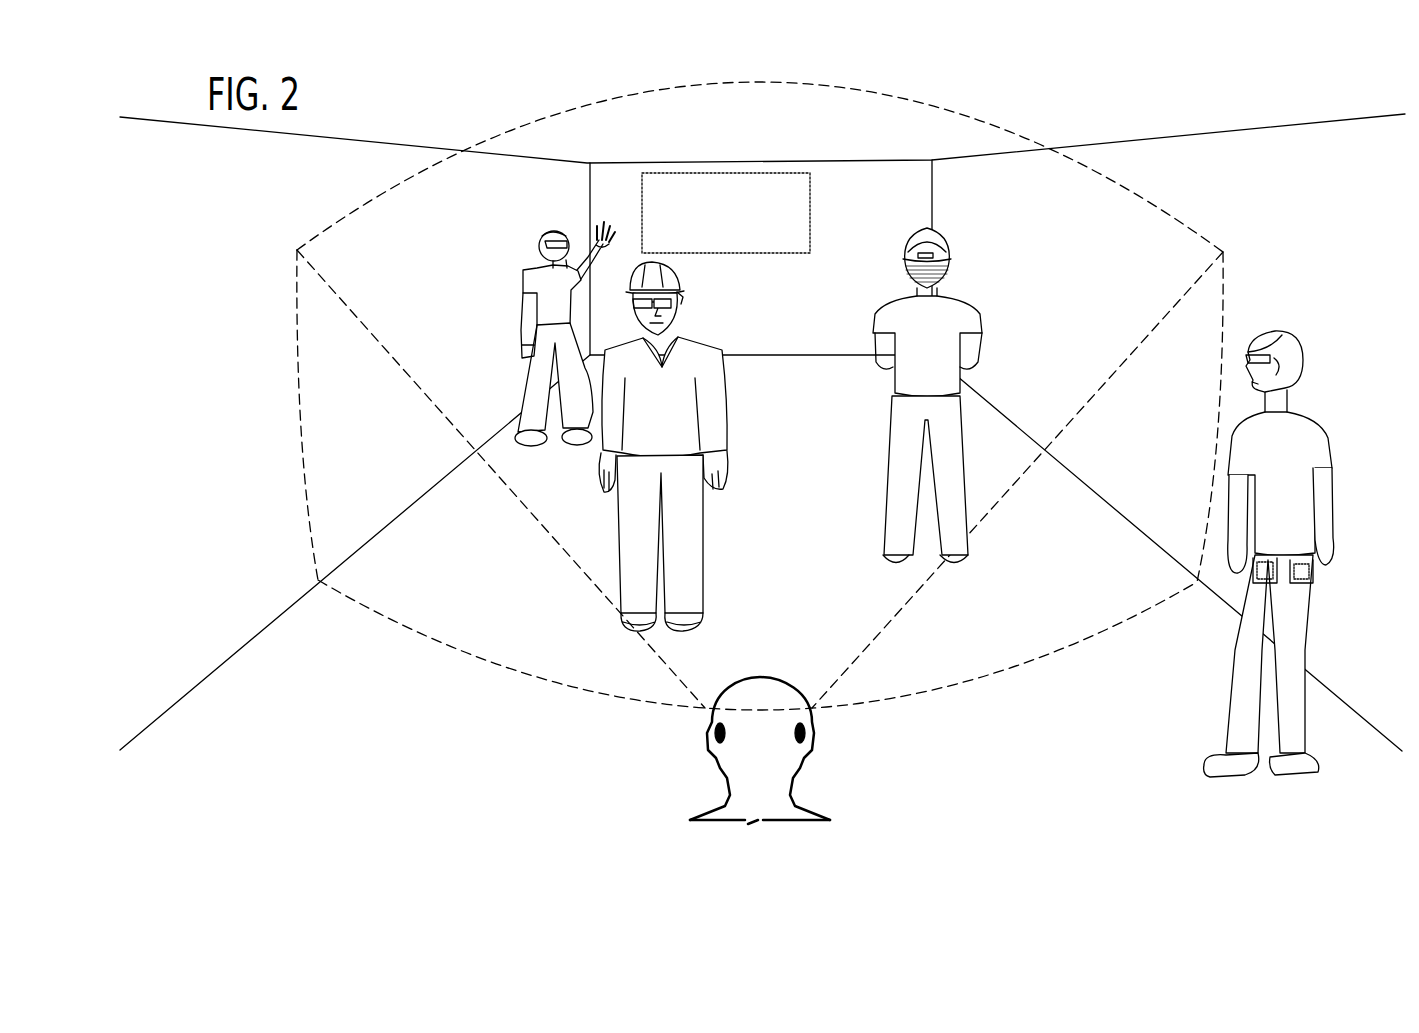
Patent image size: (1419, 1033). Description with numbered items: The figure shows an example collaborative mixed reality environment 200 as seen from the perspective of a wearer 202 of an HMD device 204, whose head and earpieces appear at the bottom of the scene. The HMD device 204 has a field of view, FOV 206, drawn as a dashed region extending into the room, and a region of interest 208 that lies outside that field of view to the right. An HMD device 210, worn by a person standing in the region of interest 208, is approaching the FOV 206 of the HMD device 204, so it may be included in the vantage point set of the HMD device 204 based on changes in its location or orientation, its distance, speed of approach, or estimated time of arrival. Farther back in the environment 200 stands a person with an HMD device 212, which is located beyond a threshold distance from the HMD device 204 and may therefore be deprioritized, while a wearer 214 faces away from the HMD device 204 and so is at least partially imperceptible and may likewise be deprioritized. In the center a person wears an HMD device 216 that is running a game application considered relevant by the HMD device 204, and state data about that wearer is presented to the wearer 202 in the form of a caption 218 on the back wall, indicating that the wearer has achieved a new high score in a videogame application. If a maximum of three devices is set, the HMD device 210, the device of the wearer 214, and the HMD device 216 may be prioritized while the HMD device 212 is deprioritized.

The collaborative mixed reality environment 200 is at (997, 94).
The wearer 202 is at (780, 750).
The HMD device 204 is at (808, 716).
The FOV 206 is at (1225, 252).
The region of interest 208 is at (1286, 512).
The HMD device 210 is at (1265, 347).
The HMD device 212 is at (568, 240).
The wearer 214 is at (977, 303).
The HMD device 216 is at (683, 297).
The caption 218 is at (812, 238).